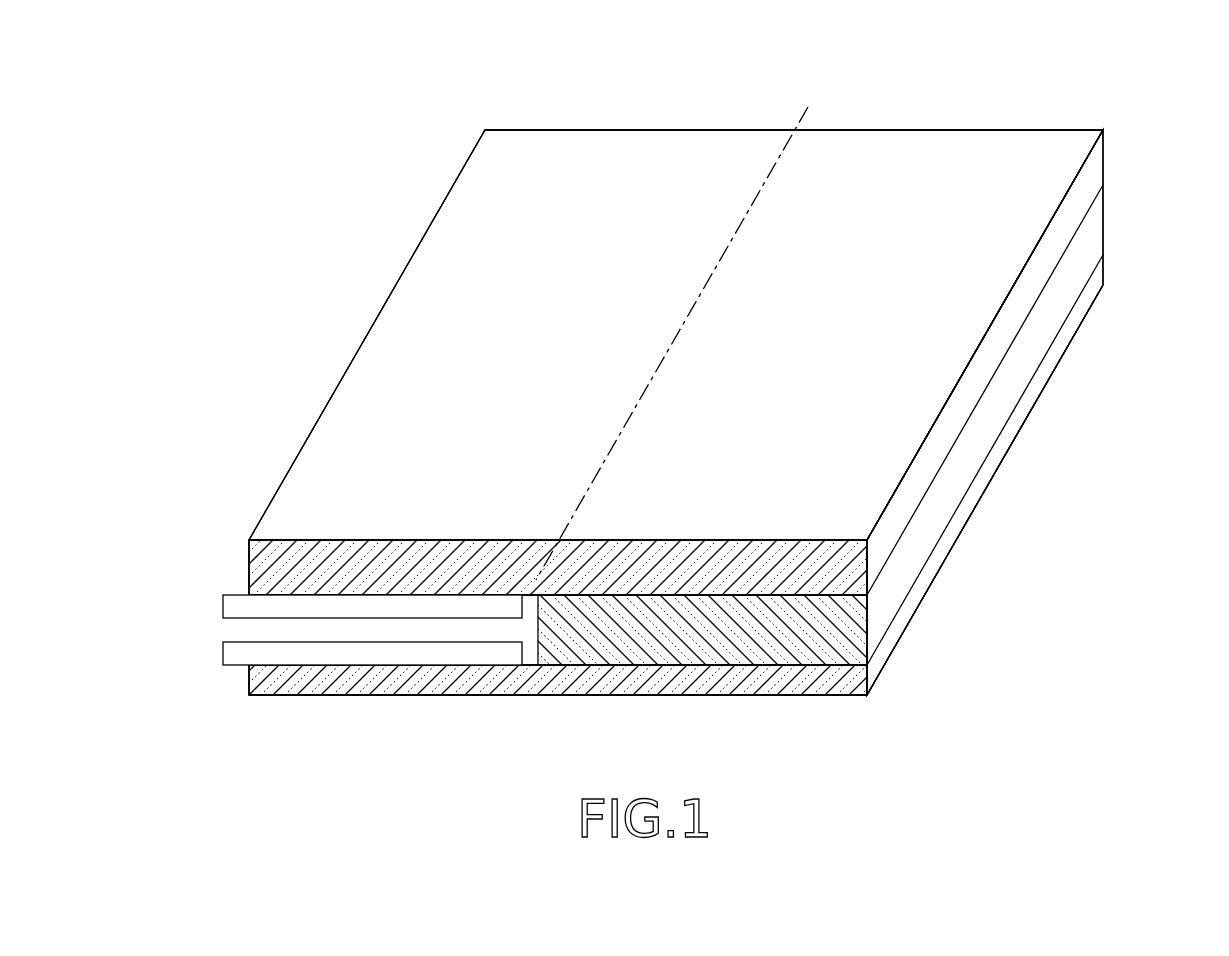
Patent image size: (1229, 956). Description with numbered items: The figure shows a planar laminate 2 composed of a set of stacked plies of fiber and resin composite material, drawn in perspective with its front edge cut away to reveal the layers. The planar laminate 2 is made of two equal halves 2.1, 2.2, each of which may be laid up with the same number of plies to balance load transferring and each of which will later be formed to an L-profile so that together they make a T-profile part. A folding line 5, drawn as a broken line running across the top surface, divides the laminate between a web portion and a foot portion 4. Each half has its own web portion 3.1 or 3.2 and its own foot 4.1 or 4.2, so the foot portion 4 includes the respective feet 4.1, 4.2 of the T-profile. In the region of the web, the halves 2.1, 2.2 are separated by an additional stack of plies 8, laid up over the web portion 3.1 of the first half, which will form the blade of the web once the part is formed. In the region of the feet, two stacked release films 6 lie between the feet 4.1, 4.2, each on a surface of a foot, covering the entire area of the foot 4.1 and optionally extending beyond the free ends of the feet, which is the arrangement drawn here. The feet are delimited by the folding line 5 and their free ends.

The planar laminate 2 is at (277, 143).
The first half 2.1 is at (1068, 484).
The second half 2.2 is at (736, 57).
The web portion of the first half 3.1 is at (828, 697).
The web portion of the second half 3.2 is at (1042, 153).
The foot portion 4 is at (277, 757).
The foot of the first half 4.1 is at (465, 698).
The foot of the second half 4.2 is at (440, 272).
The folding line 5 is at (717, 263).
The release films 6 is at (225, 597).
The additional stack of plies 8 is at (853, 621).